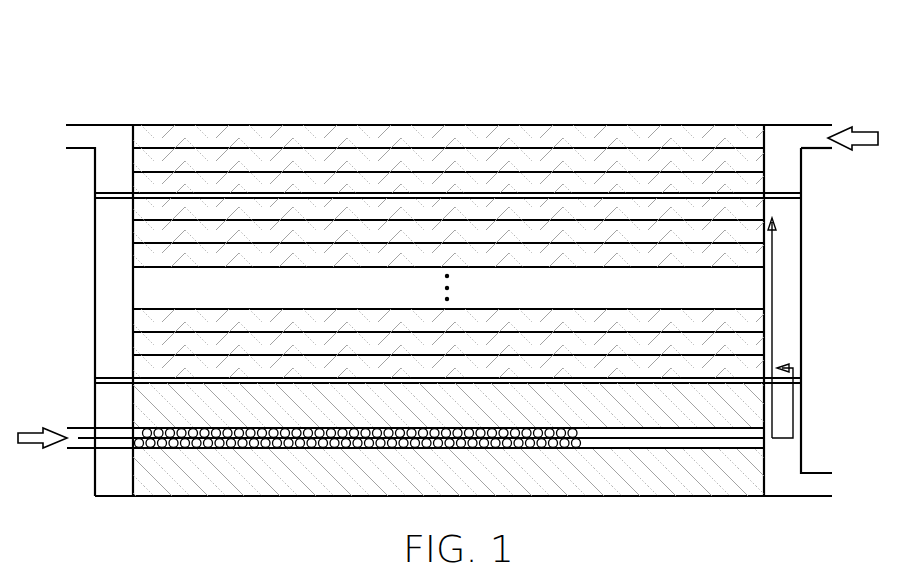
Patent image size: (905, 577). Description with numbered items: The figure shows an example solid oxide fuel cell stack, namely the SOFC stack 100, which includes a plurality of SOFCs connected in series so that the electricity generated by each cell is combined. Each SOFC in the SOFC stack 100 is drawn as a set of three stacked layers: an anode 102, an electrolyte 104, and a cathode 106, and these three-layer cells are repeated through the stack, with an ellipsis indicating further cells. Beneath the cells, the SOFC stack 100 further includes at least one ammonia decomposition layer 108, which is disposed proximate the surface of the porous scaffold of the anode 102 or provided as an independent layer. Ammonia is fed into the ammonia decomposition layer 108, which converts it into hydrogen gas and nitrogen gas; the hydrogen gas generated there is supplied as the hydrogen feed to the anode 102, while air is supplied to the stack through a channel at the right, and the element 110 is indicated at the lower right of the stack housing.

The SOFC stack 100 is at (608, 93).
The anode 102 is at (150, 172).
The electrolyte 104 is at (245, 160).
The cathode 106 is at (308, 134).
The ammonia decomposition layer 108 is at (140, 405).
The air outlet 110 is at (819, 473).